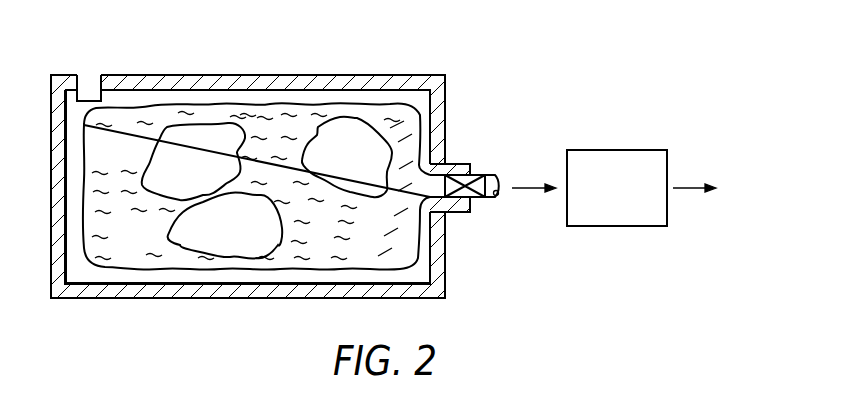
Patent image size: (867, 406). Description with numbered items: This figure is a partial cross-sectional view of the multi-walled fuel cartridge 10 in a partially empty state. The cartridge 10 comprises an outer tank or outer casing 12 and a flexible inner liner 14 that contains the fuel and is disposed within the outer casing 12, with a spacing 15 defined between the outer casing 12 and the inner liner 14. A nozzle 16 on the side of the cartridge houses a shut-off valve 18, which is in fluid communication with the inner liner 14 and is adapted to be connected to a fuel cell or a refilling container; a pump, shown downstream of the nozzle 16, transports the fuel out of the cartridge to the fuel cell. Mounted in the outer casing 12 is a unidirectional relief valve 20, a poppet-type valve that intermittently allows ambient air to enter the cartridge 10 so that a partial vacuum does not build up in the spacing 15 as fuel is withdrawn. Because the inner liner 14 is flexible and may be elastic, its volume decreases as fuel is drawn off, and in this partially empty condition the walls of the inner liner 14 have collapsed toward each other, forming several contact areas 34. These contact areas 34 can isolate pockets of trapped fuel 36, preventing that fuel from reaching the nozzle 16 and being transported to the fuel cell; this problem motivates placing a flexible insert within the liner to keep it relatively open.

The cartridge 10 is at (415, 54).
The outer casing 12 is at (193, 80).
The inner liner 14 is at (280, 125).
The spacing 15 is at (122, 100).
The nozzle 16 is at (453, 165).
The shut-off valve 18 is at (468, 197).
The unidirectional relief valve 20 is at (86, 75).
The contact areas 34 is at (208, 167).
The trapped fuel 36 is at (134, 161).